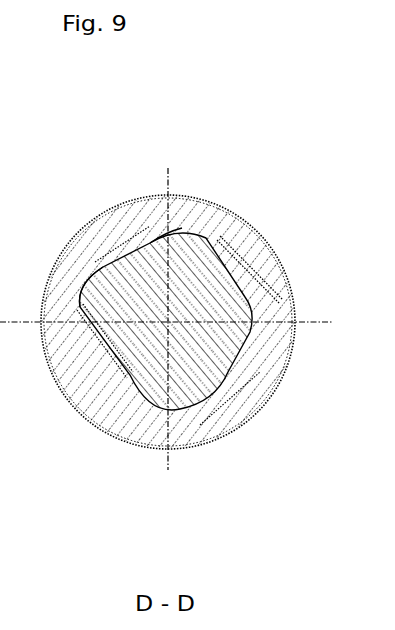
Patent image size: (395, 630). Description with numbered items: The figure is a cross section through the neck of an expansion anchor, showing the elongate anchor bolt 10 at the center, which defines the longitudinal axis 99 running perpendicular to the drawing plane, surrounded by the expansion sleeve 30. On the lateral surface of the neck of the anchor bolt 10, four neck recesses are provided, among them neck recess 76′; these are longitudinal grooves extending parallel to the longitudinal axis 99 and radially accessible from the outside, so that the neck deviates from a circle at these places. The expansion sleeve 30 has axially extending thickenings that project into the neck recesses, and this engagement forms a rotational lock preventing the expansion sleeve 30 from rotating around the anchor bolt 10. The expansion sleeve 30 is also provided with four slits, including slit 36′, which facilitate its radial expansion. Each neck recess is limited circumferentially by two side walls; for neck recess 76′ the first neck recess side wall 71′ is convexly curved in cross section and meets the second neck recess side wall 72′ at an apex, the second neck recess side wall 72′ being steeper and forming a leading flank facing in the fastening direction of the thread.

The expansion sleeve 30 is at (182, 222).
The anchor bolt 10 is at (210, 352).
The first neck recess side wall 71′ is at (147, 242).
The second neck recess side wall 72′ is at (102, 273).
The neck recess 76′ is at (127, 240).
The slit 36′ is at (225, 230).
The longitudinal axis 99 is at (168, 322).